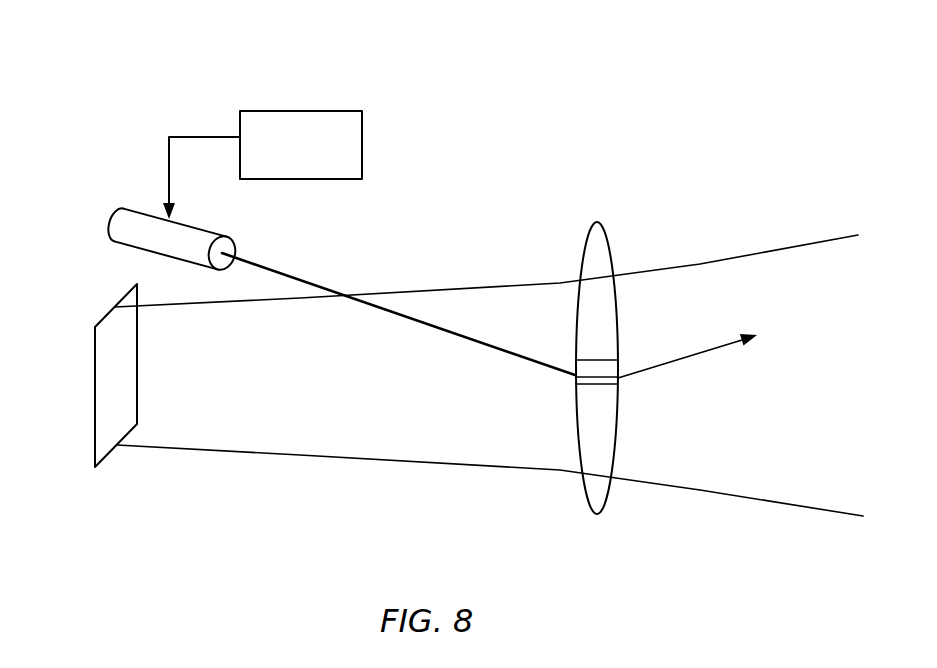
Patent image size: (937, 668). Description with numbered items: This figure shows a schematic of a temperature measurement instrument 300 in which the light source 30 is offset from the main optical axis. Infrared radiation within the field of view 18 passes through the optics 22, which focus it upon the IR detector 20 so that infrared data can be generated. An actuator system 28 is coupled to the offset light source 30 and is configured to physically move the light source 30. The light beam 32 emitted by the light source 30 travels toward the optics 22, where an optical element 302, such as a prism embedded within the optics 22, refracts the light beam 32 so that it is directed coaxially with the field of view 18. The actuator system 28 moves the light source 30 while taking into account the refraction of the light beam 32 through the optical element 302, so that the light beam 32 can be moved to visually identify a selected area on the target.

The temperature measurement instrument 300 is at (505, 143).
The actuator system 28 is at (290, 117).
The light source 30 is at (133, 213).
The IR detector 20 is at (95, 368).
The field of view 18 is at (837, 240).
The optics 22 is at (592, 507).
The optical element 302 is at (618, 357).
The light beam 32 is at (697, 352).